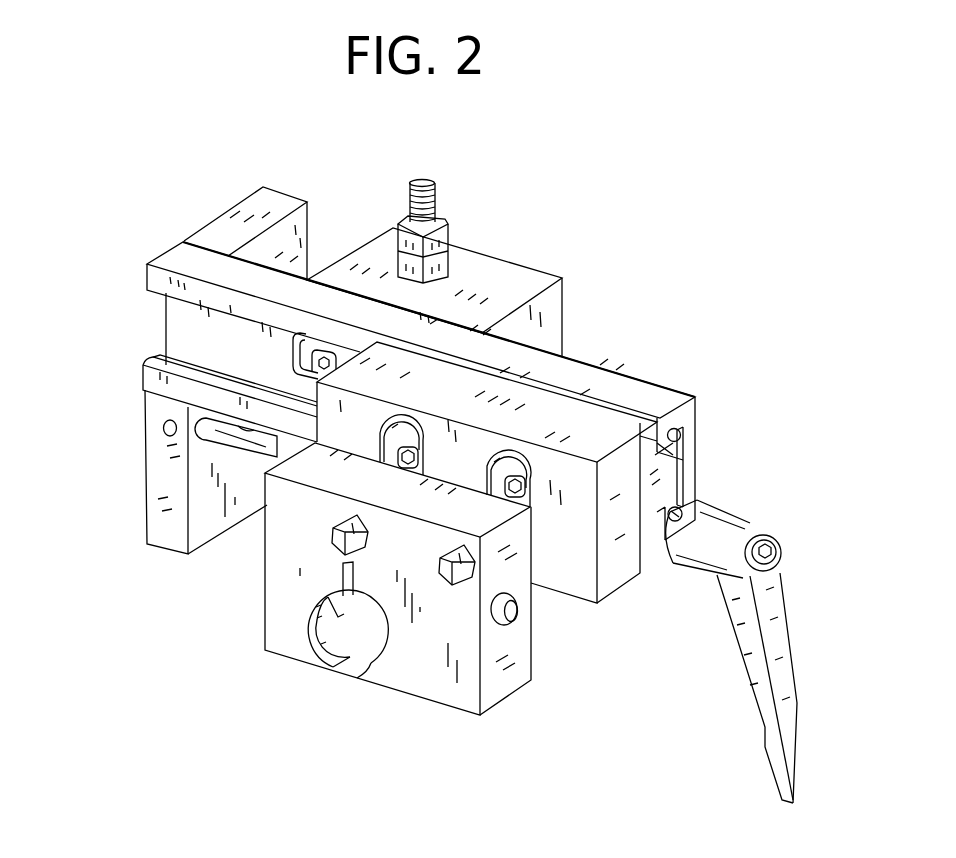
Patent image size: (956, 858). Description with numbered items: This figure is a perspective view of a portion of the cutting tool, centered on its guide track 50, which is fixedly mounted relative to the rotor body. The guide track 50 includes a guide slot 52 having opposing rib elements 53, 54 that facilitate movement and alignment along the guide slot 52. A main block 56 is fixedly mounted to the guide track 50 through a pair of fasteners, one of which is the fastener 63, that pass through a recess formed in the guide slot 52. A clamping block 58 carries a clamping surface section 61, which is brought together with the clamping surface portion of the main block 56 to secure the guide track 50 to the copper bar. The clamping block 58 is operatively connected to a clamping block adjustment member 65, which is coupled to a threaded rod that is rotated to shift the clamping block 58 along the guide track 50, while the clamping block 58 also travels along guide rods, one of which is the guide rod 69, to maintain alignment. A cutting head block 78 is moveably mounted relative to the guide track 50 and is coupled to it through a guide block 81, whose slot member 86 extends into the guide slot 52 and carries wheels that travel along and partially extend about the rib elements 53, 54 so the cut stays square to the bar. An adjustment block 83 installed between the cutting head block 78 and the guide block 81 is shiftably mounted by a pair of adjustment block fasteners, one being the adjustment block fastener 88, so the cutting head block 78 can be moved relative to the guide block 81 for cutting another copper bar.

The guide track 50 is at (170, 251).
The guide slot 52 is at (198, 325).
The rib element 53 is at (668, 424).
The rib element 54 is at (675, 522).
The main block 56 is at (474, 277).
The clamping block 58 is at (141, 476).
The clamping surface section 61 is at (198, 532).
The fastener 63 is at (330, 367).
The clamping block adjustment member 65 is at (725, 505).
The guide rod 69 is at (245, 444).
The cutting head block 78 is at (436, 196).
The guide block 81 is at (664, 467).
The adjustment block 83 is at (623, 563).
The slot member 86 is at (660, 452).
The adjustment block fastener 88 is at (410, 432).